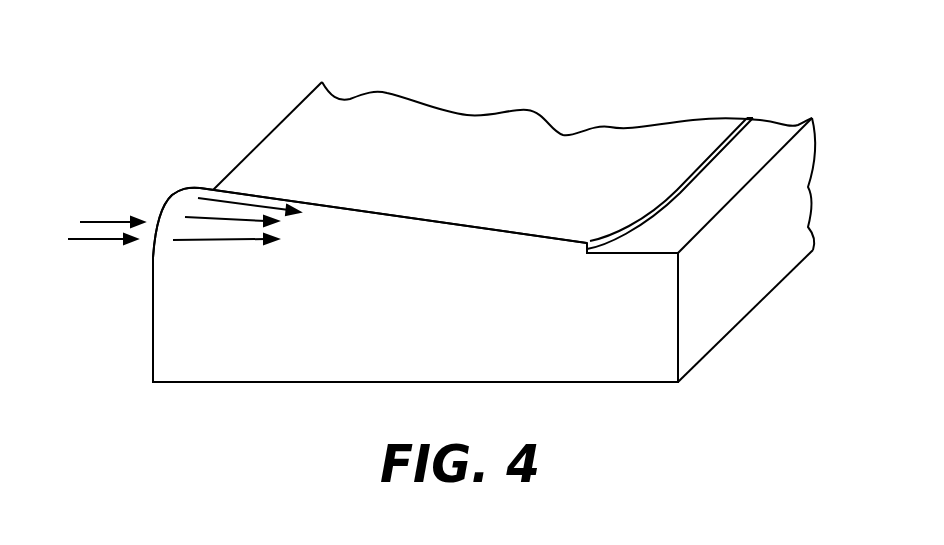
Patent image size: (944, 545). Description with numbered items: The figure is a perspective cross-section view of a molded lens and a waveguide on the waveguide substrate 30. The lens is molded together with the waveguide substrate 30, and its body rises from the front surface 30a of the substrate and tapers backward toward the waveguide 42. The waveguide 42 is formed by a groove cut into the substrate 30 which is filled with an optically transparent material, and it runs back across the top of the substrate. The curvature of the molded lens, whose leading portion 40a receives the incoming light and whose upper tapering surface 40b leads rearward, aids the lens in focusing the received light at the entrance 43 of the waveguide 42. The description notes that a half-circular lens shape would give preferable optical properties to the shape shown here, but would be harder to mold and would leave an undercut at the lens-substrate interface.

The waveguide substrate 30 is at (424, 326).
The surface of the waveguide substrate 30a is at (153, 337).
The leading edge 40a is at (160, 212).
The upper surface 40b is at (422, 235).
The waveguide 42 is at (700, 176).
The entrance of the waveguide 43 is at (588, 243).